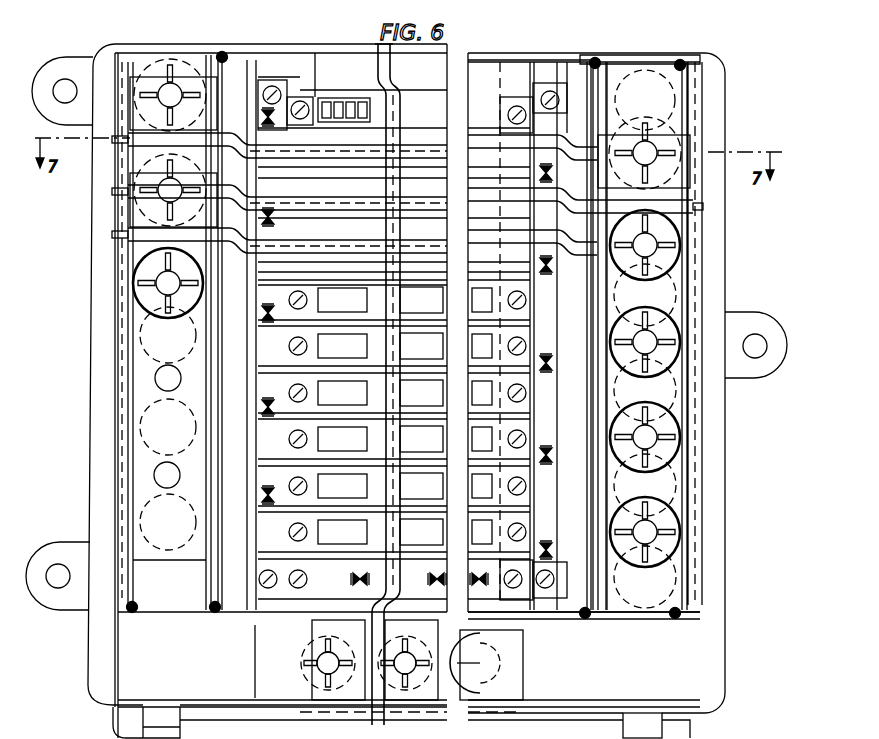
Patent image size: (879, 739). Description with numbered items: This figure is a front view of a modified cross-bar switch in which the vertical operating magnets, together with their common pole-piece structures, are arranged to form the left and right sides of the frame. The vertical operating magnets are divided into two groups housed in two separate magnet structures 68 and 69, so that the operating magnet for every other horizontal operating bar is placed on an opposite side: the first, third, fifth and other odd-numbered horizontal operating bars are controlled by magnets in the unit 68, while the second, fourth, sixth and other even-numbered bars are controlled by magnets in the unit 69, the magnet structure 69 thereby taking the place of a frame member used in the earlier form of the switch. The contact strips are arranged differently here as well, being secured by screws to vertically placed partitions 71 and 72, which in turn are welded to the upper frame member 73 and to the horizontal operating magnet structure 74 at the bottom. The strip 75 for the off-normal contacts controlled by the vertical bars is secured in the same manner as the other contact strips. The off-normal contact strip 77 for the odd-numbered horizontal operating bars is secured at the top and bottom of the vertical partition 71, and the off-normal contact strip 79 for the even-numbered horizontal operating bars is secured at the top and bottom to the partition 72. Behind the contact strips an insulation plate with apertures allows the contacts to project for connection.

The magnet structure 68 is at (140, 354).
The magnet structure 69 is at (673, 405).
The vertical partition 71 is at (278, 62).
The vertical partition 72 is at (530, 70).
The upper frame member 73 is at (598, 56).
The horizontal operating magnet structure 74 is at (583, 622).
The strip for the off-normal contacts 75 is at (503, 586).
The off-normal contact strip 77 is at (263, 447).
The off-normal contact strip 79 is at (548, 322).